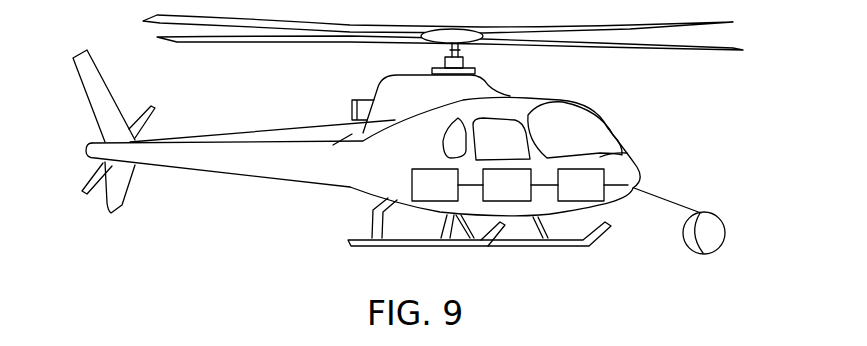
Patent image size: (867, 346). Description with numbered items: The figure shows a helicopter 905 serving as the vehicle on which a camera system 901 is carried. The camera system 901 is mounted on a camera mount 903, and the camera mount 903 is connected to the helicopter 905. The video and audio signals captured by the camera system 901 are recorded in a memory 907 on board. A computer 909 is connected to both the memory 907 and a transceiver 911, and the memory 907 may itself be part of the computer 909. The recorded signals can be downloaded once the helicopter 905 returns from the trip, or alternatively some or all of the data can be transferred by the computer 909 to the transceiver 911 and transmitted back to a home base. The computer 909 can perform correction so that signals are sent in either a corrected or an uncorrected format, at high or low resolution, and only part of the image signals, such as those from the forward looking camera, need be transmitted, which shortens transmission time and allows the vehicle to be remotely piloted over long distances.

The camera system 901 is at (705, 255).
The camera mount 903 is at (670, 198).
The helicopter 905 is at (608, 124).
The memory 907 is at (601, 198).
The computer 909 is at (527, 198).
The transceiver 911 is at (450, 198).